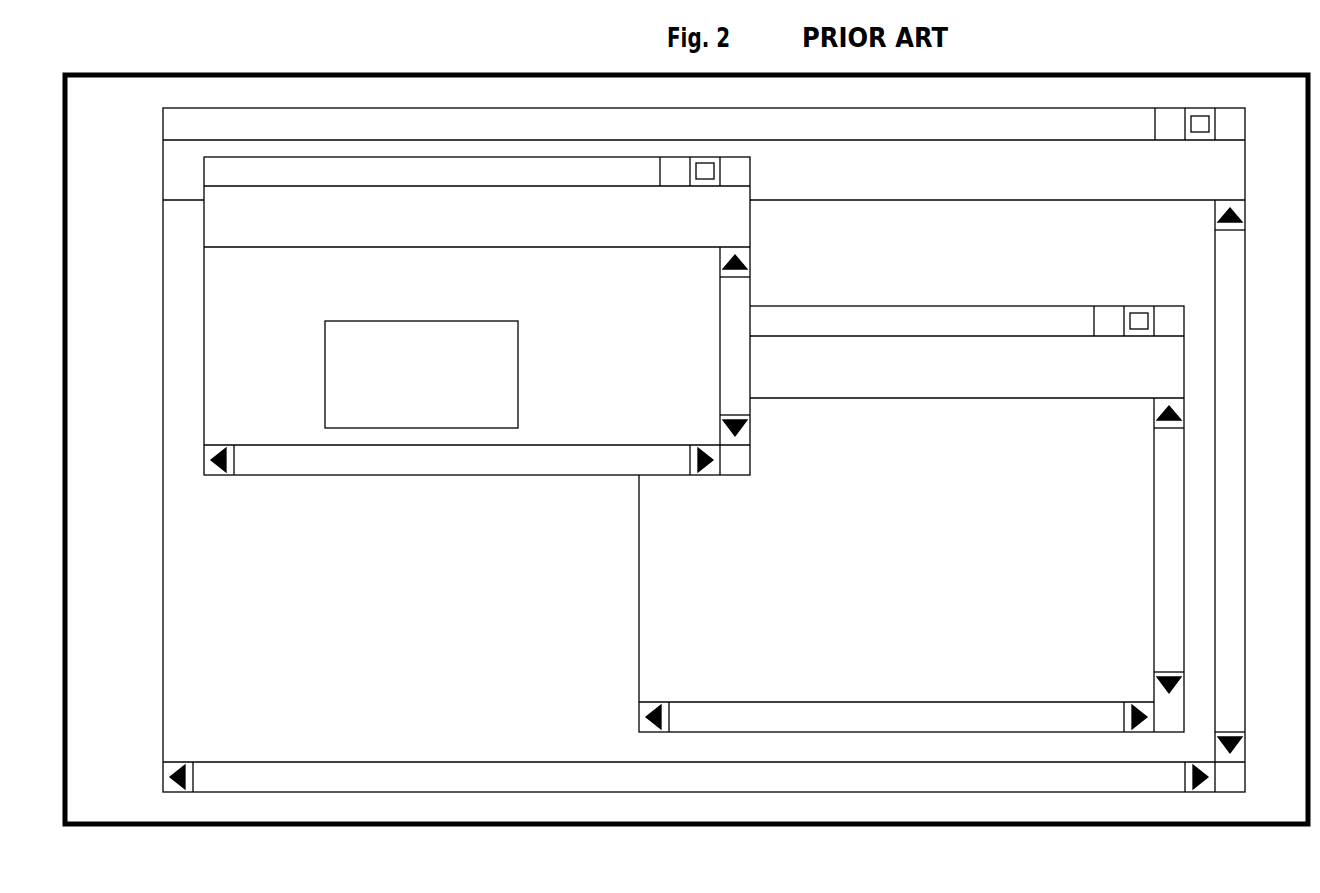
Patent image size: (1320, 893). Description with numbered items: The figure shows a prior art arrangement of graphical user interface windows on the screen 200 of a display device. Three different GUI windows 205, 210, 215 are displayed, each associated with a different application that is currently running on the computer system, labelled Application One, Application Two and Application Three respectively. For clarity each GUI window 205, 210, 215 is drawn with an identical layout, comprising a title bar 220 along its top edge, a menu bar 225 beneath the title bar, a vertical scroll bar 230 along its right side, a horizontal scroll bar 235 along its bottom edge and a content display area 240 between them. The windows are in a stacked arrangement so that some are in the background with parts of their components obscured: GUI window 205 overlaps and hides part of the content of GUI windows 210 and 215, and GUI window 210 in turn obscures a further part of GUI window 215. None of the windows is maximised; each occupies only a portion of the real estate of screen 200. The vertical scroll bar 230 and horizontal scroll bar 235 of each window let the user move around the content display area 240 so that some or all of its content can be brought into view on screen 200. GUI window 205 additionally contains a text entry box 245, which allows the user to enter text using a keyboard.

The screen 200 is at (415, 83).
The GUI window 205 is at (504, 316).
The GUI window 210 is at (879, 499).
The GUI window 215 is at (163, 417).
The title bar 220 is at (889, 325).
The menu bar 225 is at (1017, 380).
The vertical scroll bar 230 is at (1173, 538).
The horizontal scroll bar 235 is at (692, 710).
The content display area 240 is at (896, 550).
The text entry box 245 is at (520, 382).